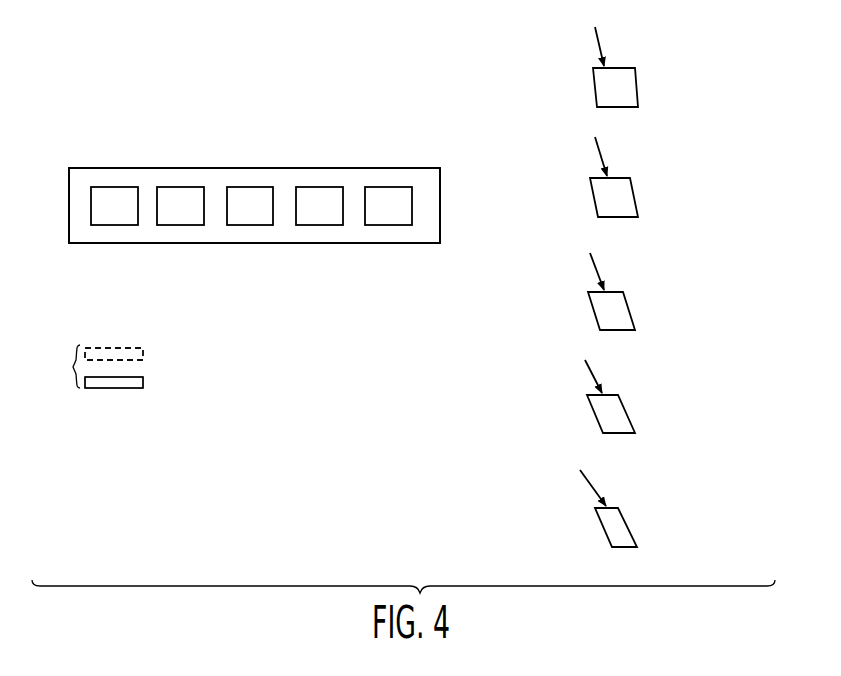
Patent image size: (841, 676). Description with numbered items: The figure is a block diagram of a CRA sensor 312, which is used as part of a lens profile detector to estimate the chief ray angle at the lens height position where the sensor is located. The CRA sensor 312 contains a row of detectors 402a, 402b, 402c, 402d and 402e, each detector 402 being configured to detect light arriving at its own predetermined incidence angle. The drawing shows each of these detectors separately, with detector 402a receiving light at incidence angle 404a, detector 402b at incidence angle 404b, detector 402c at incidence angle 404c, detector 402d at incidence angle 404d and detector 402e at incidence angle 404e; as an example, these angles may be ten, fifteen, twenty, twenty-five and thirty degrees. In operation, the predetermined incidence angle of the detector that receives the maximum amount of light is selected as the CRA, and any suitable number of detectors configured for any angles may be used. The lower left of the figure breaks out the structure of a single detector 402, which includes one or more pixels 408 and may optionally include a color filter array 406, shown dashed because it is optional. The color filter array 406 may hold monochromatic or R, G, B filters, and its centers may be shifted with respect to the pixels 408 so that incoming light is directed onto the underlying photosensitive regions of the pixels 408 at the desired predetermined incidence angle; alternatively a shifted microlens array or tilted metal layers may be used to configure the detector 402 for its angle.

The CRA sensor 312 is at (267, 70).
The detector 402 is at (323, 259).
The detector 402a is at (113, 187).
The detector 402b is at (188, 187).
The detector 402c is at (252, 187).
The detector 402d is at (323, 187).
The detector 402e is at (388, 187).
The incidence angle 404a is at (603, 38).
The incidence angle 404b is at (603, 147).
The incidence angle 404c is at (598, 260).
The incidence angle 404d is at (598, 368).
The incidence angle 404e is at (593, 482).
The color filter array 406 is at (143, 352).
The pixel 408 is at (143, 382).